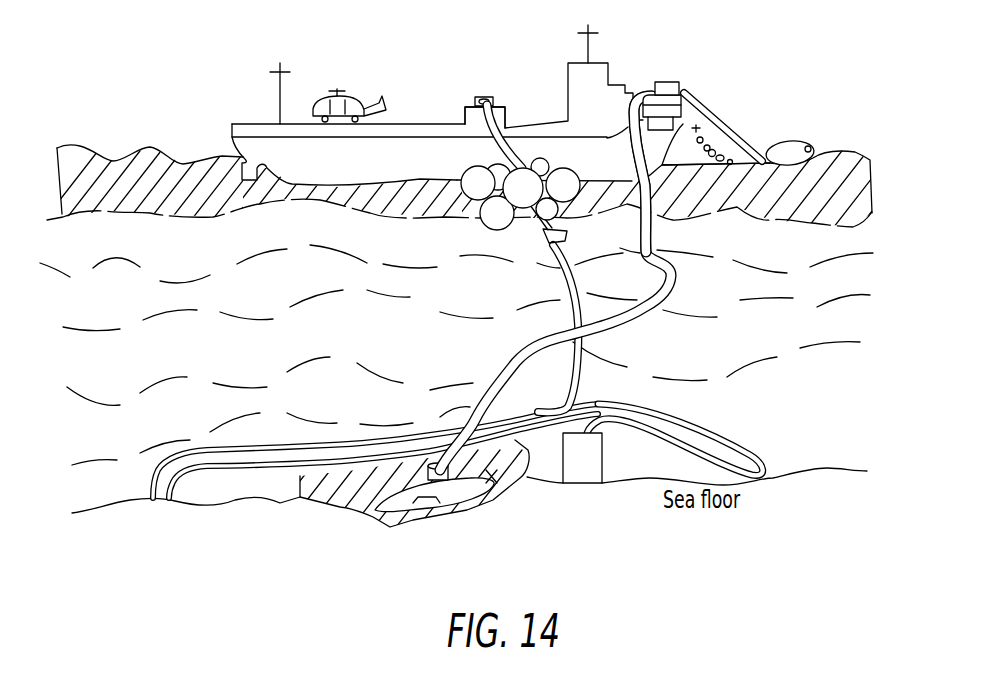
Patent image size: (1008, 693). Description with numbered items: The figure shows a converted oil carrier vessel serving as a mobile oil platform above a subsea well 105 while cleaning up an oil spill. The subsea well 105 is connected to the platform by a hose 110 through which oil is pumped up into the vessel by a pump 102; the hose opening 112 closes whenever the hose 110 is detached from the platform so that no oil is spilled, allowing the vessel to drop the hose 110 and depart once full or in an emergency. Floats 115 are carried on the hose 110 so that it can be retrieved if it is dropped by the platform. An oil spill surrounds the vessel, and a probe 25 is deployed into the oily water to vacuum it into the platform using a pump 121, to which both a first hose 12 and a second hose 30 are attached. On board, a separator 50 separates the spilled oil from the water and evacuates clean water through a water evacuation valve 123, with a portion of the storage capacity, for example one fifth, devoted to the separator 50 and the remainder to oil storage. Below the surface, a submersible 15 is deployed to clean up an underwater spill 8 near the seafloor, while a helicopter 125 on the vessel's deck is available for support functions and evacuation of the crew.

The underwater spill 8 is at (843, 190).
The hose 12 is at (493, 375).
The submersible 15 is at (427, 492).
The probe 25 is at (795, 142).
The hose 30 is at (716, 118).
The separator 50 is at (620, 147).
The pump 102 is at (498, 106).
The subsea well 105 is at (588, 468).
The hose 110 is at (420, 147).
The hose opening 112 is at (488, 97).
The floats 115 is at (563, 188).
The pump 121 is at (670, 82).
The water evacuation valve 123 is at (688, 90).
The helicopter 125 is at (323, 105).